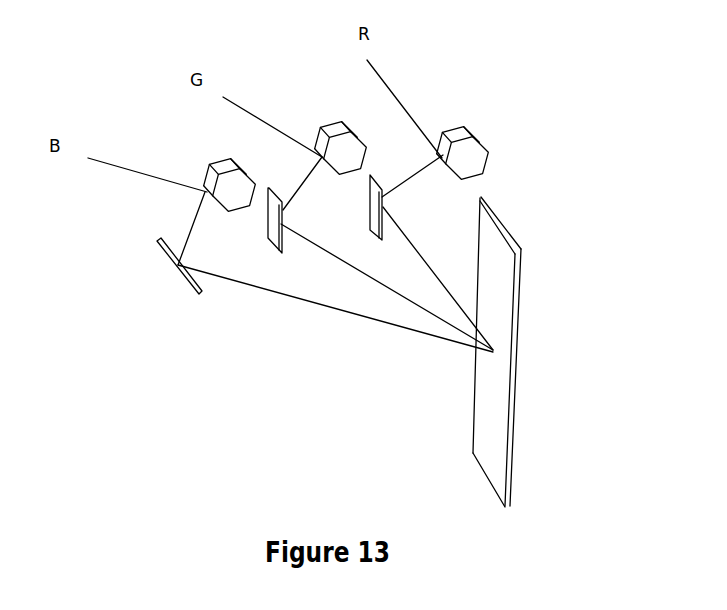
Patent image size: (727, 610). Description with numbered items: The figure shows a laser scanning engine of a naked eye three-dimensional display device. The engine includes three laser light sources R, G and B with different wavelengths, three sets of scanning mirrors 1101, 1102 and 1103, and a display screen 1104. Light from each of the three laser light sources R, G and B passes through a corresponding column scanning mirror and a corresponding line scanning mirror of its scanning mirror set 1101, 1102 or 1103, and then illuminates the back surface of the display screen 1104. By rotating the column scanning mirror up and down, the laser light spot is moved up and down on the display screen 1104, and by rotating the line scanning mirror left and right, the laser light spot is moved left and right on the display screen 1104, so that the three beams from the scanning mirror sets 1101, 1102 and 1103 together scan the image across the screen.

The scanning mirror set 1101 is at (197, 205).
The scanning mirror set 1102 is at (268, 197).
The scanning mirror set 1103 is at (375, 177).
The display screen 1104 is at (492, 398).